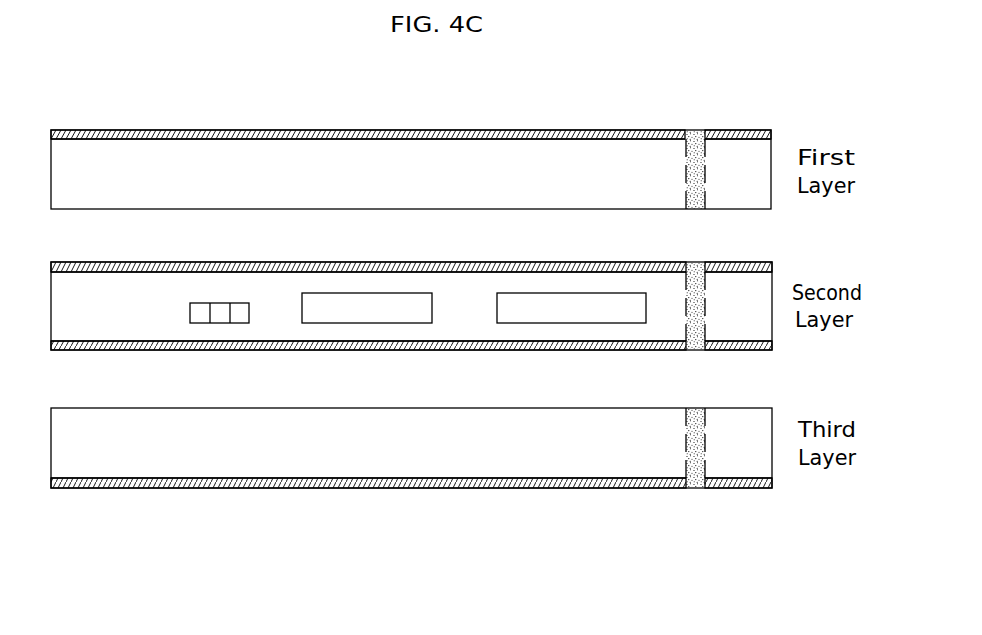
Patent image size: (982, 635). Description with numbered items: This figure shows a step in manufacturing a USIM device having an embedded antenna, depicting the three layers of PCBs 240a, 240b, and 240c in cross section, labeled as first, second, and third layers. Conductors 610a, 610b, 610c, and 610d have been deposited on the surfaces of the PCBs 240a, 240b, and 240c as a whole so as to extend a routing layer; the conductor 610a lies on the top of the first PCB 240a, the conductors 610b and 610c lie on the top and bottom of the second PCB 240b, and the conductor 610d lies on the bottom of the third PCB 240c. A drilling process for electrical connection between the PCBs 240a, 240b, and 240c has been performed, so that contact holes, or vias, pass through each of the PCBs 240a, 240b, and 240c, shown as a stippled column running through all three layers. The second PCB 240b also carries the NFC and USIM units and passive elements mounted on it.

The PCB 240a is at (411, 140).
The PCB 240b is at (411, 306).
The PCB 240c is at (411, 478).
The conductor 610a is at (667, 131).
The conductor 610b is at (737, 265).
The conductor 610c is at (734, 347).
The conductor 610d is at (574, 486).